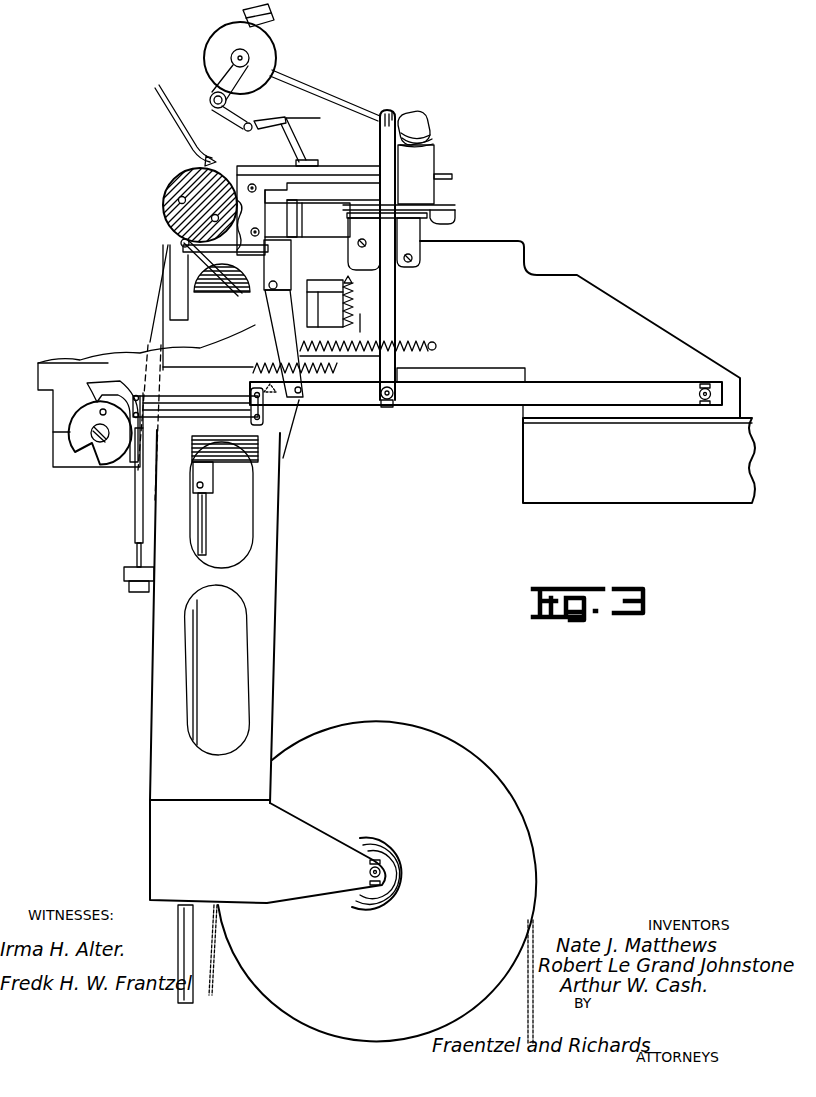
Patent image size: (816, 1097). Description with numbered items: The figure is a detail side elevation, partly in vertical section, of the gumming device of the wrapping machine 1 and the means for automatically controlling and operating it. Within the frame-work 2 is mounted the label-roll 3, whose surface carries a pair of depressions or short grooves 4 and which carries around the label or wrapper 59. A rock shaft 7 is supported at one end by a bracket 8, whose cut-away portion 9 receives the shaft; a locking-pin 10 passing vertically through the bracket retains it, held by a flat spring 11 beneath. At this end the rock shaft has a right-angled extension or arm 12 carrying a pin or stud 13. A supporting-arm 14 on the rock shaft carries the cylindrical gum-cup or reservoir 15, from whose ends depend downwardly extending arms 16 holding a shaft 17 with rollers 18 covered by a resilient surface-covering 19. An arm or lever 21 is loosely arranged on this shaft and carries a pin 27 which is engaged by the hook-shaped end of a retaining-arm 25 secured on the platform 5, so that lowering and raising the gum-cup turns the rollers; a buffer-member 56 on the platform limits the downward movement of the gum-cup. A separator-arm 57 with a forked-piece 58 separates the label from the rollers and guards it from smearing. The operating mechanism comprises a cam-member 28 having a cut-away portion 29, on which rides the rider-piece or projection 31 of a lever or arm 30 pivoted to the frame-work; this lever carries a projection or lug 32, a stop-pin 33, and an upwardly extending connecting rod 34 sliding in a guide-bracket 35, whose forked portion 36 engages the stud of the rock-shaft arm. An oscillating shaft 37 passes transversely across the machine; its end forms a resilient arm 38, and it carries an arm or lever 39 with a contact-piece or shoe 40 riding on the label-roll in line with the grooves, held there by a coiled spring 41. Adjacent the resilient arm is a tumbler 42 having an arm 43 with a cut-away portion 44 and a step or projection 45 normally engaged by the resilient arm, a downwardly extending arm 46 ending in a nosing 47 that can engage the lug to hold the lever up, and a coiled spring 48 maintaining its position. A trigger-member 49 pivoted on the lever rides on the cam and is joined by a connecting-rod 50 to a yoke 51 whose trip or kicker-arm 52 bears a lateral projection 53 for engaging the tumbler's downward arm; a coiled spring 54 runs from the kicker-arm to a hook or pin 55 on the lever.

The wrapping machine 1 is at (372, 170).
The frame-work 2 is at (522, 258).
The label-roll 3 is at (182, 176).
The depressions or short grooves 4 is at (218, 172).
The platform 5 is at (352, 164).
The rock shaft 7 is at (428, 112).
The bracket 8 is at (430, 157).
The cut-away portion 9 is at (428, 128).
The locking-pin 10 is at (440, 140).
The flat spring 11 is at (458, 220).
The right-angled extension or arm 12 is at (408, 112).
The pin or stud 13 is at (392, 110).
The supporting-arm 14 is at (330, 90).
The gum-cup or reservoir 15 is at (270, 52).
The downwardly extending arms 16 is at (231, 60).
The shaft 17 is at (218, 110).
The rollers 18 is at (213, 90).
The surface-covering 19 is at (210, 100).
The arm or lever 21 is at (251, 123).
The retaining-arm 25 is at (300, 150).
The pin 27 is at (284, 118).
The cam-member 28 is at (78, 425).
The cut-away portion 29 is at (92, 458).
The lever or arm 30 is at (496, 402).
The rider-piece or projection 31 is at (85, 398).
The projection or lug 32 is at (268, 400).
The stop-pin 33 is at (305, 393).
The connecting rod 34 is at (398, 298).
The guide-bracket 35 is at (402, 250).
The forked portion 36 is at (381, 112).
The oscillating shaft 37 is at (368, 356).
The arm 38 is at (299, 342).
The arm or lever 39 is at (208, 316).
The contact-piece or shoe 40 is at (178, 243).
The coiled spring 41 is at (364, 323).
The tumbler 42 is at (283, 318).
The arm 43 is at (344, 278).
The cut-away portion 44 is at (324, 299).
The step or projection 45 is at (306, 280).
The downwardly extending arm 46 is at (272, 314).
The nosing 47 is at (278, 394).
The coiled spring 48 is at (361, 301).
The trigger-member 49 is at (130, 463).
The connecting-rod 50 is at (190, 440).
The yoke 51 is at (285, 440).
The trip or kicker-arm 52 is at (256, 388).
The lateral projection 53 is at (262, 322).
The coiled spring 54 is at (320, 395).
The hook or pin 55 is at (345, 380).
The buffer-member 56 is at (300, 140).
The separator-arm 57 is at (168, 122).
The forked-piece 58 is at (218, 150).
The label or wrapper 59 is at (166, 215).